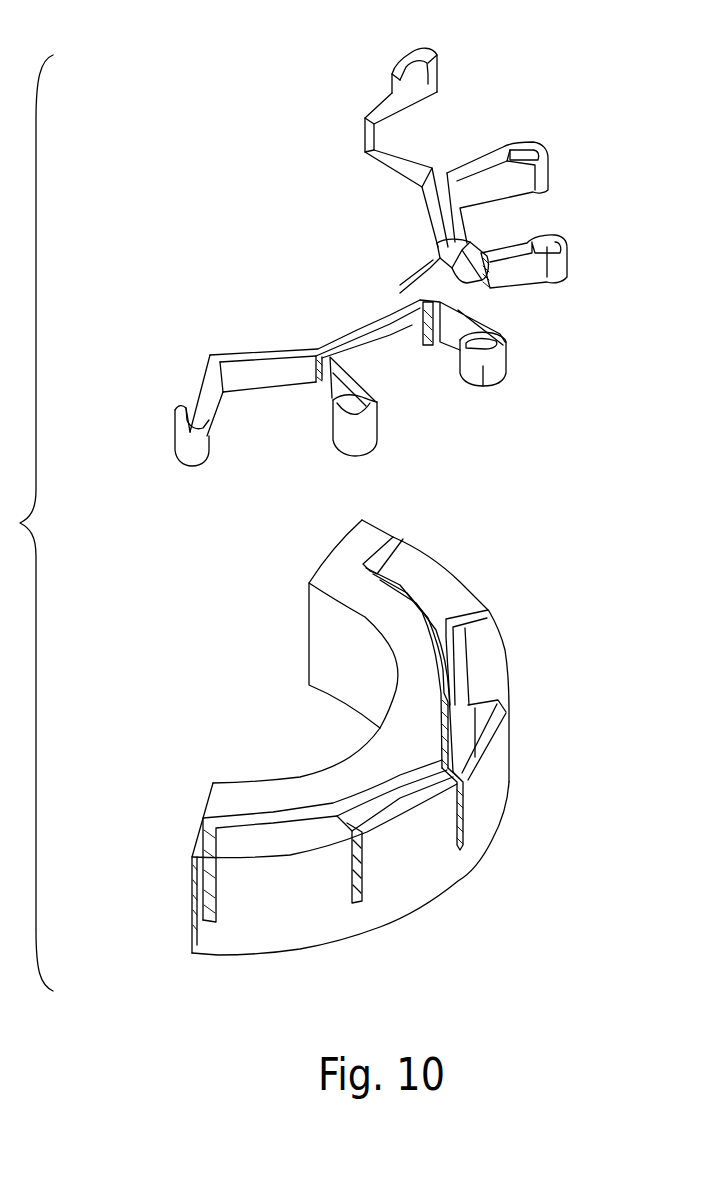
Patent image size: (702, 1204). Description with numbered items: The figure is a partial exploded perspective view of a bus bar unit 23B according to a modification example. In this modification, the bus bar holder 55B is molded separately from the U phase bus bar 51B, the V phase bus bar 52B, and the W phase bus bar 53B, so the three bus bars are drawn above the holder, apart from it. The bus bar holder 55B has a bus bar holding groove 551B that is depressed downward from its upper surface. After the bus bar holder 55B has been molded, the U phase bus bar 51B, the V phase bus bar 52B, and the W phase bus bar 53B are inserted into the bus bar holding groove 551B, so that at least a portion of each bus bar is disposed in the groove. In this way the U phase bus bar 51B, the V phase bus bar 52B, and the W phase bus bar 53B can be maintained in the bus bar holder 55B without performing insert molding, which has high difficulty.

The bus bar unit 23B is at (277, 96).
The U phase bus bar 51B is at (363, 311).
The V phase bus bar 52B is at (479, 214).
The W phase bus bar 53B is at (388, 185).
The bus bar holder 55B is at (432, 852).
The bus bar holding groove 551B is at (378, 774).